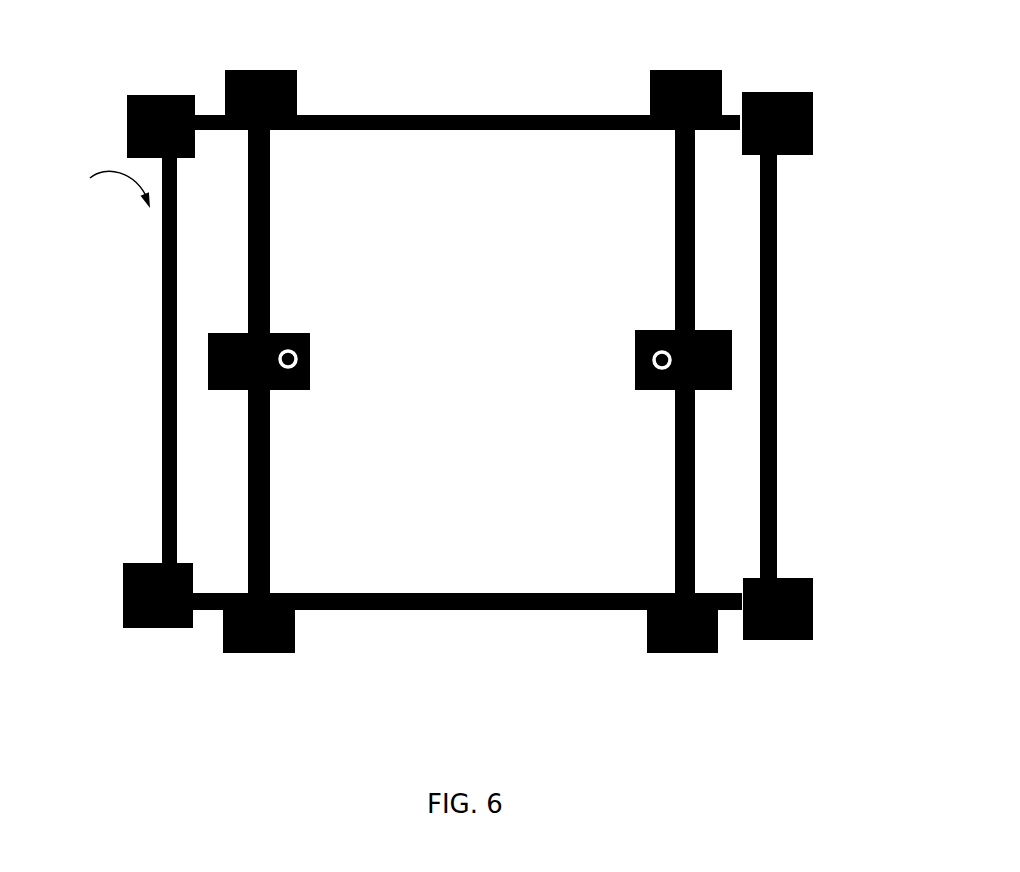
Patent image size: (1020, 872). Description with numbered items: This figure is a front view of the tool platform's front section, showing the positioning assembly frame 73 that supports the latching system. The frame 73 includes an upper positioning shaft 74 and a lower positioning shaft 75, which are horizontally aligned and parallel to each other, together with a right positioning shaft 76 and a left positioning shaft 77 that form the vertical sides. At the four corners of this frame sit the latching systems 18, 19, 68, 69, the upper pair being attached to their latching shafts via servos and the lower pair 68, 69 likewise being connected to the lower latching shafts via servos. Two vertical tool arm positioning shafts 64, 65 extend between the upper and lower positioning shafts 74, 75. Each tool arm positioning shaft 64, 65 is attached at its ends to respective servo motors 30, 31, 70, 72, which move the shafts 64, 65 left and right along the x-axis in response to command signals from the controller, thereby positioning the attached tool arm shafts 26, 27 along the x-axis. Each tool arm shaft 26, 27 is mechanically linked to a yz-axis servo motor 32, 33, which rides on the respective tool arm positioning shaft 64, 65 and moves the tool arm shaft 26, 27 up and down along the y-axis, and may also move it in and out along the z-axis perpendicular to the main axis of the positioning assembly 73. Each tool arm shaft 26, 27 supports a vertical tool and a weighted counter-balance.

The latching system 18 is at (155, 100).
The latching system 19 is at (797, 145).
The latching system 68 is at (125, 580).
The latching system 69 is at (813, 595).
The servo motor 30 is at (250, 70).
The servo motor 31 is at (662, 70).
The servo motor 70 is at (242, 655).
The servo motor 72 is at (663, 653).
The upper positioning shaft 74 is at (428, 115).
The lower positioning shaft 75 is at (345, 610).
The right positioning shaft 76 is at (165, 290).
The left positioning shaft 77 is at (777, 310).
The tool arm positioning shaft 64 is at (267, 190).
The tool arm positioning shaft 65 is at (675, 195).
The yz-axis servo motor 32 is at (282, 332).
The yz-axis servo motor 33 is at (638, 330).
The tool arm shaft 26 is at (310, 360).
The tool arm shaft 27 is at (633, 368).
The positioning assembly frame 73 is at (108, 189).